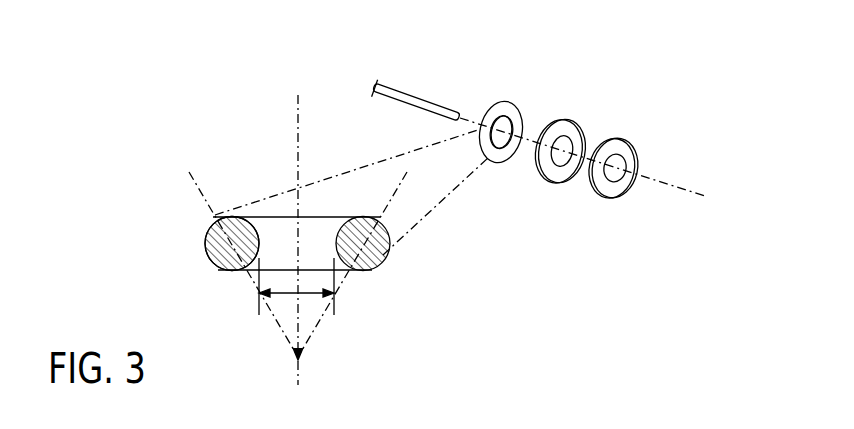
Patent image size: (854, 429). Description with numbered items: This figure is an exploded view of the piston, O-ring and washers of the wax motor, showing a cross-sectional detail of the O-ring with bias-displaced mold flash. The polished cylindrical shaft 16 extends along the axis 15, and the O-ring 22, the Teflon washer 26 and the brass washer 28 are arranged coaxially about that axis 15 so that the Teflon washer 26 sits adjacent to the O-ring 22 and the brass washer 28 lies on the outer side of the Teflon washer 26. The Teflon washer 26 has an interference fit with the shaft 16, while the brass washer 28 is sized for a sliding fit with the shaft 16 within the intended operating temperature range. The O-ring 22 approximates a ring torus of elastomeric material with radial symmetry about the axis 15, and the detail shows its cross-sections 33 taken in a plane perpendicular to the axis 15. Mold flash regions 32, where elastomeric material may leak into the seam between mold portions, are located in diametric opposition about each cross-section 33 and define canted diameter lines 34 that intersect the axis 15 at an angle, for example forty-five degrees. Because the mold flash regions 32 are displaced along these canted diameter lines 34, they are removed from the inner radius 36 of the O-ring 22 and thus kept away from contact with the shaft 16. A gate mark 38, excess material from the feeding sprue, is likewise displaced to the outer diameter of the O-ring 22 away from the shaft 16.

The axis 15 is at (297, 117).
The shaft 16 is at (418, 93).
The O-ring 22 is at (267, 217).
The Teflon washer 26 is at (580, 127).
The brass washer 28 is at (627, 142).
The mold flash region 32 is at (215, 217).
The cross-section 33 is at (218, 262).
The diameter line 34 is at (198, 178).
The inner radius 36 is at (287, 295).
The gate mark 38 is at (205, 243).